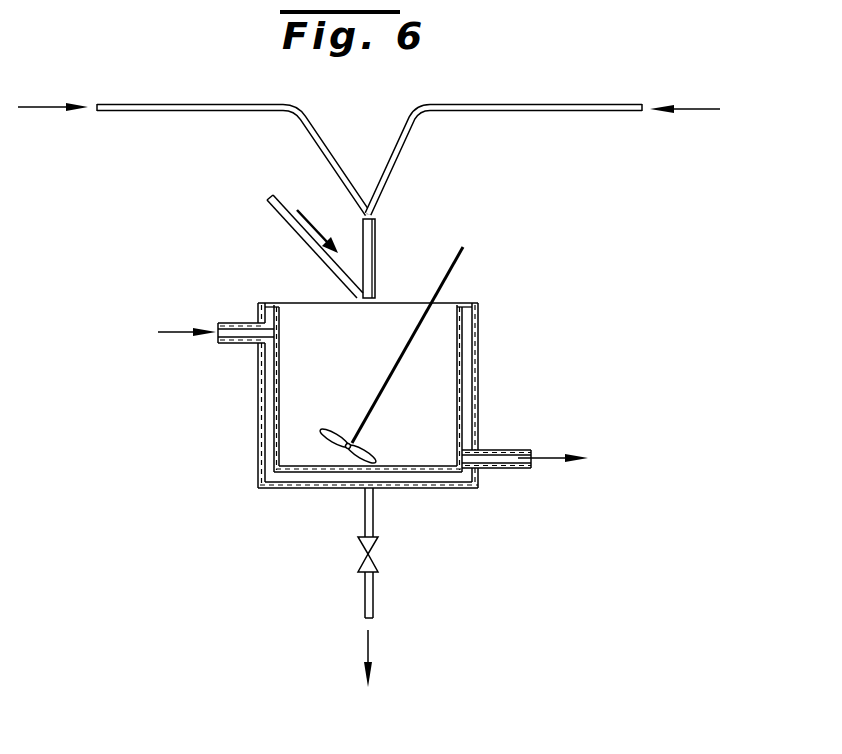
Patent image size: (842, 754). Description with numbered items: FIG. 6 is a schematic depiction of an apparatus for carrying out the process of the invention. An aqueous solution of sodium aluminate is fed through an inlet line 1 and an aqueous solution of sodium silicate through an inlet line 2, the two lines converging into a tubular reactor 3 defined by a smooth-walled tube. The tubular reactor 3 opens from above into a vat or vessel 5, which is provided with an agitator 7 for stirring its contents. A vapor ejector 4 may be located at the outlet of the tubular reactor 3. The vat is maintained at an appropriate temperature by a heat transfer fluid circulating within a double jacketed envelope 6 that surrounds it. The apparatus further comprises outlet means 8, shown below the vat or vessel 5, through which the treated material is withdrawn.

The inlet line 1 is at (126, 105).
The inlet line 2 is at (582, 105).
The tubular reactor 3 is at (377, 247).
The vapor ejector 4 is at (297, 232).
The vat or vessel 5 is at (478, 368).
The double jacketed envelope 6 is at (240, 323).
The agitator 7 is at (452, 272).
The outlet means 8 is at (375, 562).